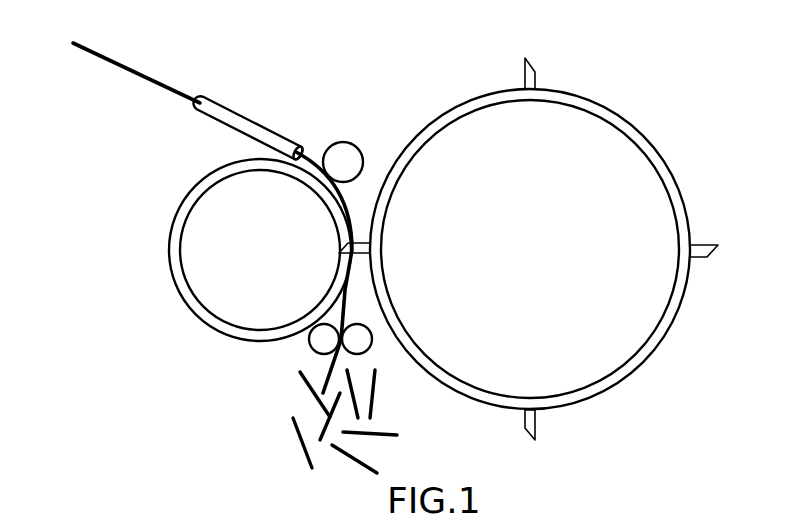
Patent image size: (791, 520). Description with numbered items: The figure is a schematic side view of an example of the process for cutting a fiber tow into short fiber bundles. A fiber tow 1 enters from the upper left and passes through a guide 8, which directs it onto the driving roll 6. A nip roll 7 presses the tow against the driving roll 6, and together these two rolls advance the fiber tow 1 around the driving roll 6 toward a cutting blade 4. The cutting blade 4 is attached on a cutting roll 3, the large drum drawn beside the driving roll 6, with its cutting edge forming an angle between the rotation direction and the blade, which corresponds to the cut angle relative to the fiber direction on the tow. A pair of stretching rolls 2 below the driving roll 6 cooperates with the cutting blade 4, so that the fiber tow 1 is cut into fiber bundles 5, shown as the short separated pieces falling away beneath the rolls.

The fiber tow 1 is at (142, 73).
The stretching rolls 2 is at (311, 340).
The cutting roll 3 is at (614, 148).
The cutting blade 4 is at (355, 243).
The fiber bundles 5 is at (373, 428).
The driving roll 6 is at (190, 250).
The nip roll 7 is at (347, 157).
The guide 8 is at (247, 127).